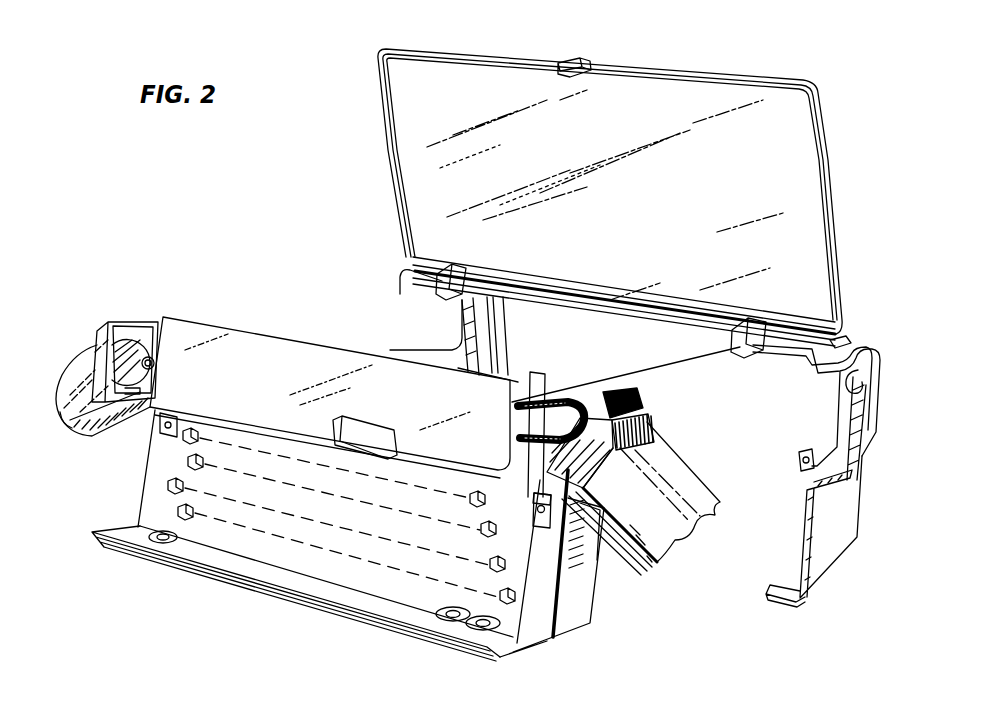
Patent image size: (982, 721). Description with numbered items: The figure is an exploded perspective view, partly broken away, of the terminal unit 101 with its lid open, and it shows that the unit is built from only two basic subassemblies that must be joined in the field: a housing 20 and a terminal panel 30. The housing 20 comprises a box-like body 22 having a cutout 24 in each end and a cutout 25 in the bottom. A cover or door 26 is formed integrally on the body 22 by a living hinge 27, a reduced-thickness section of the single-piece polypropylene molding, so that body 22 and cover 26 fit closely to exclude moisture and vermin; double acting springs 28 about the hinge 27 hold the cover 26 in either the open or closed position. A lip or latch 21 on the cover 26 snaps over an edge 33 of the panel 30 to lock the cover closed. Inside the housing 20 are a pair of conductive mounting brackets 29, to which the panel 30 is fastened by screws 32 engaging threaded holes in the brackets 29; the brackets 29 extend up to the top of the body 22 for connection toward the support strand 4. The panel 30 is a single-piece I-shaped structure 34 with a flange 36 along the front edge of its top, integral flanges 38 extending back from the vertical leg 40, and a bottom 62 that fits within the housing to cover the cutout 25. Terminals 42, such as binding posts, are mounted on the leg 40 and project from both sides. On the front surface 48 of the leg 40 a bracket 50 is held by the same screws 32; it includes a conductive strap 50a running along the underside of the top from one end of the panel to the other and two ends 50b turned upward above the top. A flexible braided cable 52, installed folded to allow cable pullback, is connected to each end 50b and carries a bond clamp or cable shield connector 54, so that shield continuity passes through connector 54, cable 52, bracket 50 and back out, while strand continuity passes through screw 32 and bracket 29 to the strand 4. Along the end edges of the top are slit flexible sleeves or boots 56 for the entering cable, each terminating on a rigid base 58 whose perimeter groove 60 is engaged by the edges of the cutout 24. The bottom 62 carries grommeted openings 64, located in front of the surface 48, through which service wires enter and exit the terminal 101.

The support strand 4 is at (686, 378).
The housing 20 is at (863, 524).
The lip or latch 21 is at (571, 58).
The box-like body 22 is at (842, 505).
The cutout 24 is at (436, 328).
The cutout 25 is at (772, 572).
The cover or door 26 is at (828, 157).
The integral or living hinge 27 is at (848, 340).
The double acting springs 28 is at (470, 264).
The conductive mounting brackets 29 is at (500, 316).
The terminal panel or board 30 is at (583, 627).
The bolts or screws 32 is at (568, 509).
The edge 33 is at (226, 586).
The I-shaped structure 34 is at (556, 633).
The flange 36 is at (205, 339).
The integral flanges 38 is at (592, 601).
The vertical leg 40 is at (570, 579).
The terminals 42 is at (172, 485).
The front surface 48 is at (142, 508).
The bracket 50 is at (160, 429).
The conductive strap 50a is at (383, 447).
The ends 50b is at (533, 495).
The flexible braided cable 52 is at (574, 405).
The bond clamp or cable shield connector 54 is at (530, 398).
The flexible sleeves or boots 56 is at (90, 375).
The rigid base 58 is at (644, 410).
The groove 60 is at (652, 444).
The bottom 62 is at (132, 562).
The grommeted openings 64 is at (478, 633).
The terminal unit 101 is at (294, 149).